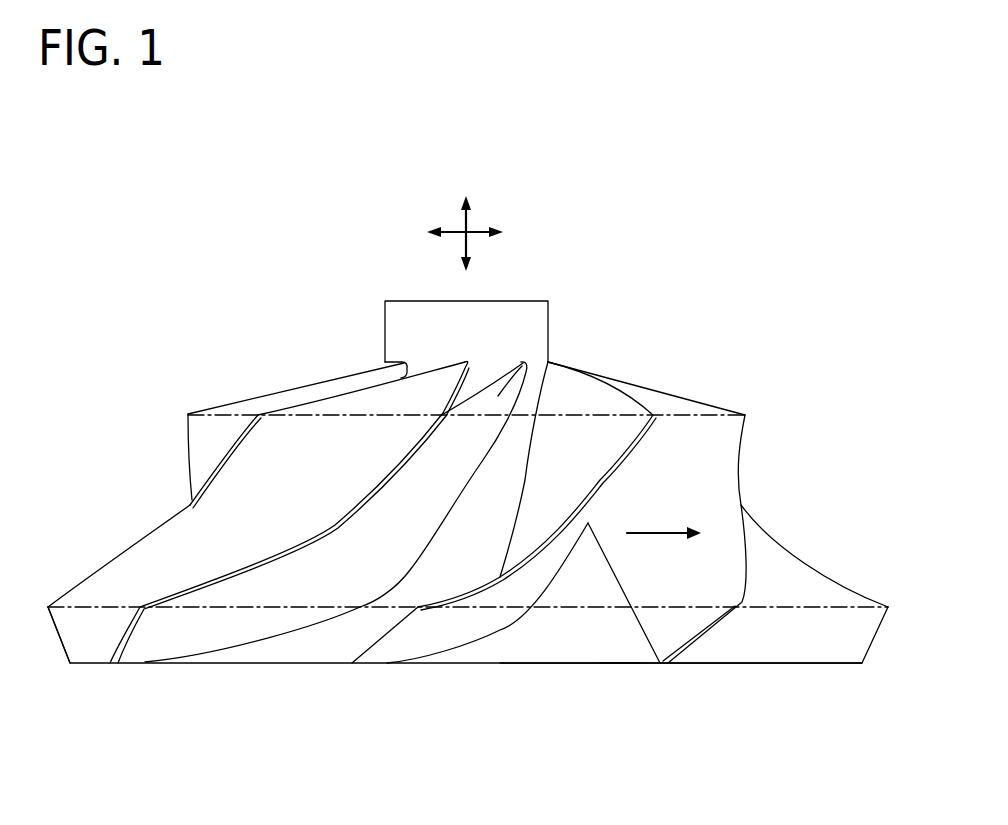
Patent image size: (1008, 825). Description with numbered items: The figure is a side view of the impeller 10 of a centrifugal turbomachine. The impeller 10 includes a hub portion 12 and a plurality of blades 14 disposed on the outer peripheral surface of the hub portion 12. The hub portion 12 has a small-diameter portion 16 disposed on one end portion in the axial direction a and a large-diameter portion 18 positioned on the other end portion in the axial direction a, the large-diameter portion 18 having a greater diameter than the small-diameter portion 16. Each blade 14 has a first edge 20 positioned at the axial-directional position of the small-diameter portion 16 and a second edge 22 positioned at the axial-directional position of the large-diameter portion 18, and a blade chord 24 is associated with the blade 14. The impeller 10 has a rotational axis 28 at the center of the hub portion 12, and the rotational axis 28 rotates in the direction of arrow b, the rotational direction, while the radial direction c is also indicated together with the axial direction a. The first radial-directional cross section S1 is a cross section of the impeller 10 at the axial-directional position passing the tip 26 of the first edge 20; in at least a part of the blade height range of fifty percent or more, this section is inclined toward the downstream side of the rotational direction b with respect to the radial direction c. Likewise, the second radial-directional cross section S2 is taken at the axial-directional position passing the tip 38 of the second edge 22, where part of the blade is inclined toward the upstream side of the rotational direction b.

The impeller 10 is at (315, 250).
The hub portion 12 is at (515, 667).
The blade 14 is at (712, 394).
The small-diameter portion 16 is at (523, 430).
The large-diameter portion 18 is at (620, 663).
The first edge 20 is at (260, 393).
The second edge 22 is at (377, 643).
The blade chord 24 is at (154, 539).
The tip 26 is at (188, 415).
The rotational axis 28 is at (522, 312).
The tip 38 is at (47, 607).
The first radial-directional cross section S1 is at (600, 415).
The second radial-directional cross section S2 is at (563, 609).
The axial direction a is at (470, 222).
The rotational direction b is at (652, 533).
The radial direction c is at (463, 235).